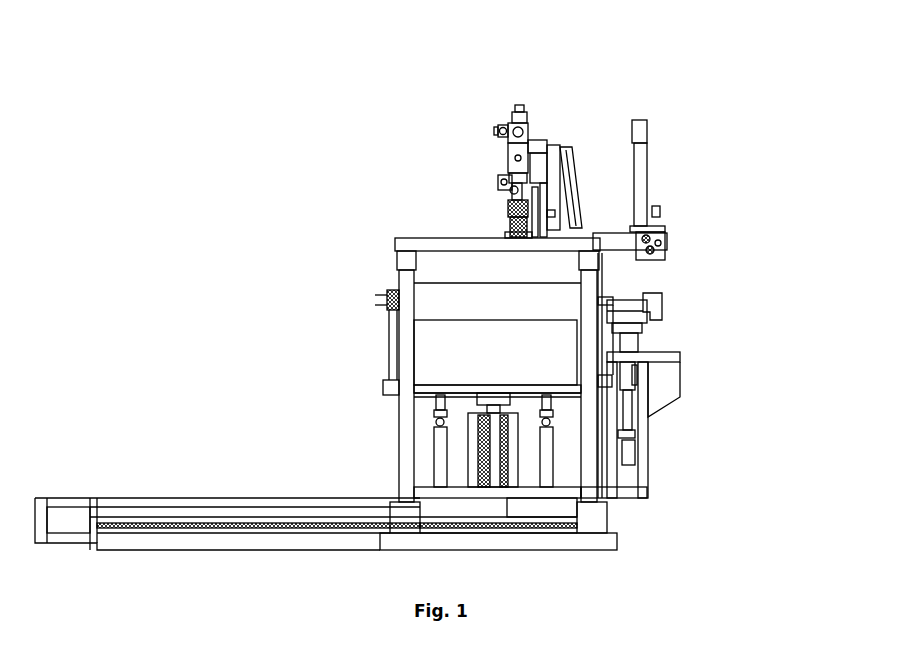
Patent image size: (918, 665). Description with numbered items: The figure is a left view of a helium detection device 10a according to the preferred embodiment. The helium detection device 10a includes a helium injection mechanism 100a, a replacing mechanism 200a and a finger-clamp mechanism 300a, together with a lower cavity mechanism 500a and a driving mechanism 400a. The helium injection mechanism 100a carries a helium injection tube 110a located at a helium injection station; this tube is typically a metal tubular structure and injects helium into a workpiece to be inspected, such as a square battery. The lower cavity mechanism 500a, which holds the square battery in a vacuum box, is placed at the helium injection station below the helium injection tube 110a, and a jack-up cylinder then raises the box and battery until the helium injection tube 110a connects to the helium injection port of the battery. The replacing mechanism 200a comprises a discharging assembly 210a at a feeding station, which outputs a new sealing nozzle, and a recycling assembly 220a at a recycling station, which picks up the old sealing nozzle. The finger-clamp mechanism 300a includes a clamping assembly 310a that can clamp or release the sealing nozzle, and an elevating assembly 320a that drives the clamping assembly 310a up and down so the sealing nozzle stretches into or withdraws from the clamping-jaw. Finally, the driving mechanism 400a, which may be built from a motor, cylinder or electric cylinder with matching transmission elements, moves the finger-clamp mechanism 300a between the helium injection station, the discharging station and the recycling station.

The helium detection device 10a is at (120, 40).
The helium injection mechanism 100a is at (494, 163).
The helium injection tube 110a is at (508, 226).
The replacing mechanism 200a is at (747, 162).
The discharging assembly 210a is at (651, 206).
The recycling assembly 220a is at (665, 237).
The finger-clamp mechanism 300a is at (775, 462).
The clamping assembly 310a is at (641, 313).
The elevating assembly 320a is at (635, 430).
The driving mechanism 400a is at (164, 486).
The lower cavity mechanism 500a is at (420, 415).